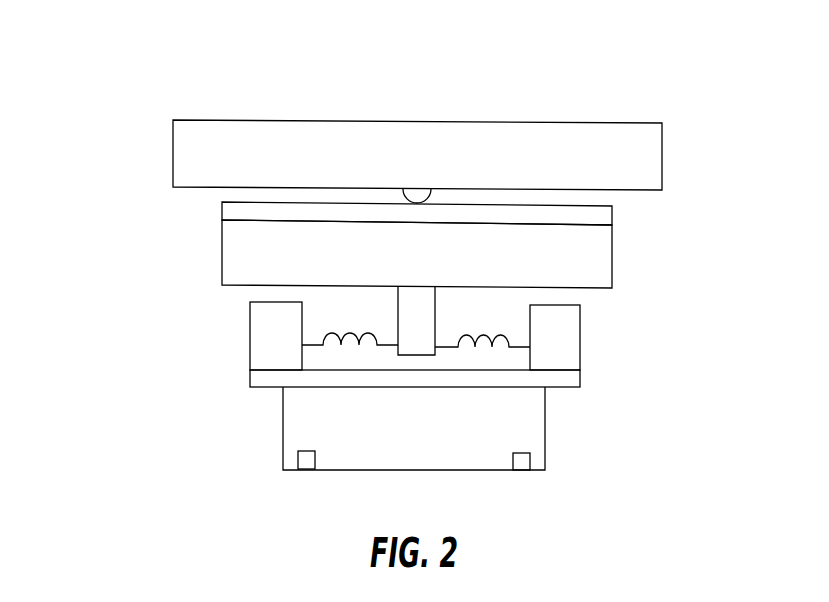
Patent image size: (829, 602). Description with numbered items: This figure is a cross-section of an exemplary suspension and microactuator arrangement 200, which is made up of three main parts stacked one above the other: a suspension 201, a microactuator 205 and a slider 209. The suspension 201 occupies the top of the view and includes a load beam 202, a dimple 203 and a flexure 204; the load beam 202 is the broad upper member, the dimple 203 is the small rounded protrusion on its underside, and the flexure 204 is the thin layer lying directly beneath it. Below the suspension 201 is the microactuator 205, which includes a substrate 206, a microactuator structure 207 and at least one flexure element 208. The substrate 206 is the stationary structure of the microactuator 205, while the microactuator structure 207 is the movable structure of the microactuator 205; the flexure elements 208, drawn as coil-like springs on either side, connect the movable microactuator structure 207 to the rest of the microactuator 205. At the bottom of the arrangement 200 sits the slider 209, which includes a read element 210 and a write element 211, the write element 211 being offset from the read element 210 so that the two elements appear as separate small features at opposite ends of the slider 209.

The suspension and microactuator arrangement 200 is at (189, 70).
The suspension 201 is at (698, 123).
The load beam 202 is at (187, 147).
The dimple 203 is at (421, 182).
The flexure 204 is at (215, 203).
The microactuator 205 is at (702, 225).
The substrate 206 is at (228, 256).
The microactuator structure 207 is at (262, 334).
The flexure element 208 is at (355, 330).
The slider 209 is at (696, 390).
The read element 210 is at (304, 471).
The write element 211 is at (521, 472).